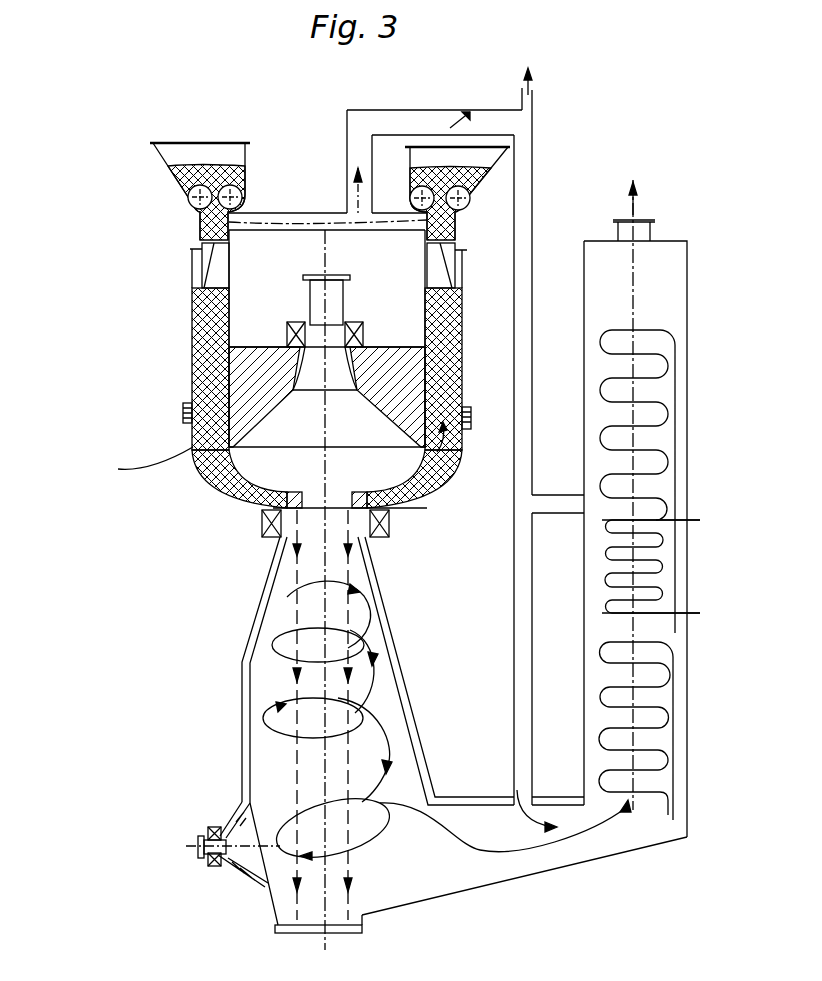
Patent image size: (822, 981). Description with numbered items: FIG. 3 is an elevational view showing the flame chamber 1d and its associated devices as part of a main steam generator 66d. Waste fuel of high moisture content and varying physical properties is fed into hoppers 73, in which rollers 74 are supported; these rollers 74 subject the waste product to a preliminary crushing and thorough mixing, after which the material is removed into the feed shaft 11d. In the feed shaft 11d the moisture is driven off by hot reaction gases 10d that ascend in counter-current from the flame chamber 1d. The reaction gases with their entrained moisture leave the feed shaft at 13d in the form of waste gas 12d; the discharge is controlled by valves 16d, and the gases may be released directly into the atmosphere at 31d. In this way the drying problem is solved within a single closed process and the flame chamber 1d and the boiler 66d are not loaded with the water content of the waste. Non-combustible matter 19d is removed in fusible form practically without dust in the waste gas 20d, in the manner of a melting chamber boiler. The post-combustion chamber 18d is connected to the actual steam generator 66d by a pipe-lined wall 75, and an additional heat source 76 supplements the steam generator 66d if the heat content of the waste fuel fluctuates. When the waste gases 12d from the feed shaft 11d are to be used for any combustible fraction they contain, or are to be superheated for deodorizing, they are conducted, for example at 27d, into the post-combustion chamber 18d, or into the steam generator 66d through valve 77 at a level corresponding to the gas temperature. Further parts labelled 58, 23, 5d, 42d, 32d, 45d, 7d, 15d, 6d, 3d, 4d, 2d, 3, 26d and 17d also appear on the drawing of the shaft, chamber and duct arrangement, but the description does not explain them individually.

The hopper 73 is at (178, 148).
The rollers 74 is at (180, 180).
The feed chute 58 is at (202, 237).
The gas duct 23 is at (294, 213).
The feed shaft outlet 13d is at (252, 224).
The waste gas 12d is at (355, 182).
The valves 16d is at (522, 103).
The atmospheric discharge 31d is at (545, 85).
The shaft 5d is at (311, 296).
The bearing 42d is at (295, 336).
The bearing 32d is at (362, 346).
The bearing 45d is at (262, 522).
The rotor cone 7d is at (258, 404).
The feed shaft 11d is at (192, 398).
The hot reaction gases 10d is at (440, 476).
The inlet nozzle 15d is at (186, 424).
The bottom of chamber 6d is at (196, 472).
The flame chamber 1d is at (418, 470).
The outlet ring 3d is at (238, 486).
The outlet ring 4d is at (362, 492).
The outlet opening 2d is at (312, 494).
The pipe-lined wall 75 is at (243, 676).
The combustion chamber 3 is at (265, 700).
The non-combustible matter 19d is at (348, 607).
The waste gas 20d is at (281, 737).
The additional heat source 76 is at (206, 835).
The ash outlet 26d is at (278, 924).
The post-combustion chamber 18d is at (502, 866).
The gas inlet point 27d is at (518, 806).
The gas duct 17d is at (524, 578).
The valve 77 is at (545, 504).
The main steam generator 66d is at (665, 360).